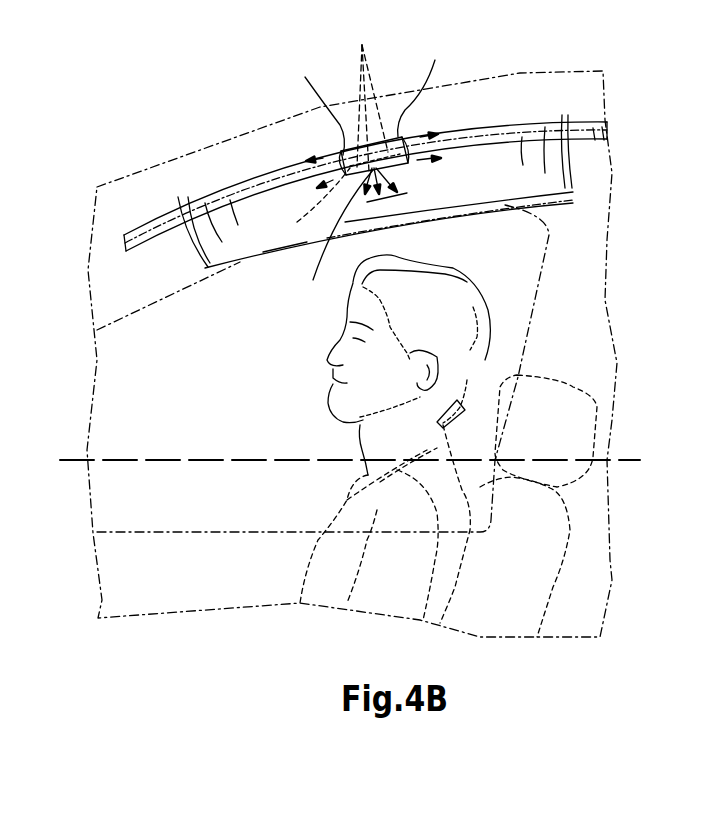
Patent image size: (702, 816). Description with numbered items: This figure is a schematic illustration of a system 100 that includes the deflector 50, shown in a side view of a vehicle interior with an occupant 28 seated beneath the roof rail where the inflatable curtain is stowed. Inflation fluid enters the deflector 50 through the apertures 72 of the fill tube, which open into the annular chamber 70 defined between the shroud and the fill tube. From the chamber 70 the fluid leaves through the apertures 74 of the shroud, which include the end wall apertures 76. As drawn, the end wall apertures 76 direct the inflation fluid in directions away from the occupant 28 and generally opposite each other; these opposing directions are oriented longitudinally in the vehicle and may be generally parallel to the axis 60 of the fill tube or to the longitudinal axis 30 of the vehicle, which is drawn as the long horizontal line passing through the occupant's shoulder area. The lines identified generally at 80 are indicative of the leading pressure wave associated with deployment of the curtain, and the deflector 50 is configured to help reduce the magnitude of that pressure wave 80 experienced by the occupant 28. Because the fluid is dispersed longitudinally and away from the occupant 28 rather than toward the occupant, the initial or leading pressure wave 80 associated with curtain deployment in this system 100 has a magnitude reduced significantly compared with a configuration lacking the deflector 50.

The system 100 is at (232, 108).
The apertures 72 is at (368, 97).
The apertures 74 is at (338, 233).
The end wall apertures 76 is at (365, 93).
The deflector 50 is at (307, 202).
The annular chamber 70 is at (400, 165).
The axis of the fill tube 60 is at (603, 153).
The pressure wave 80 is at (265, 268).
The occupant 28 is at (300, 437).
The longitudinal axis 30 is at (617, 462).